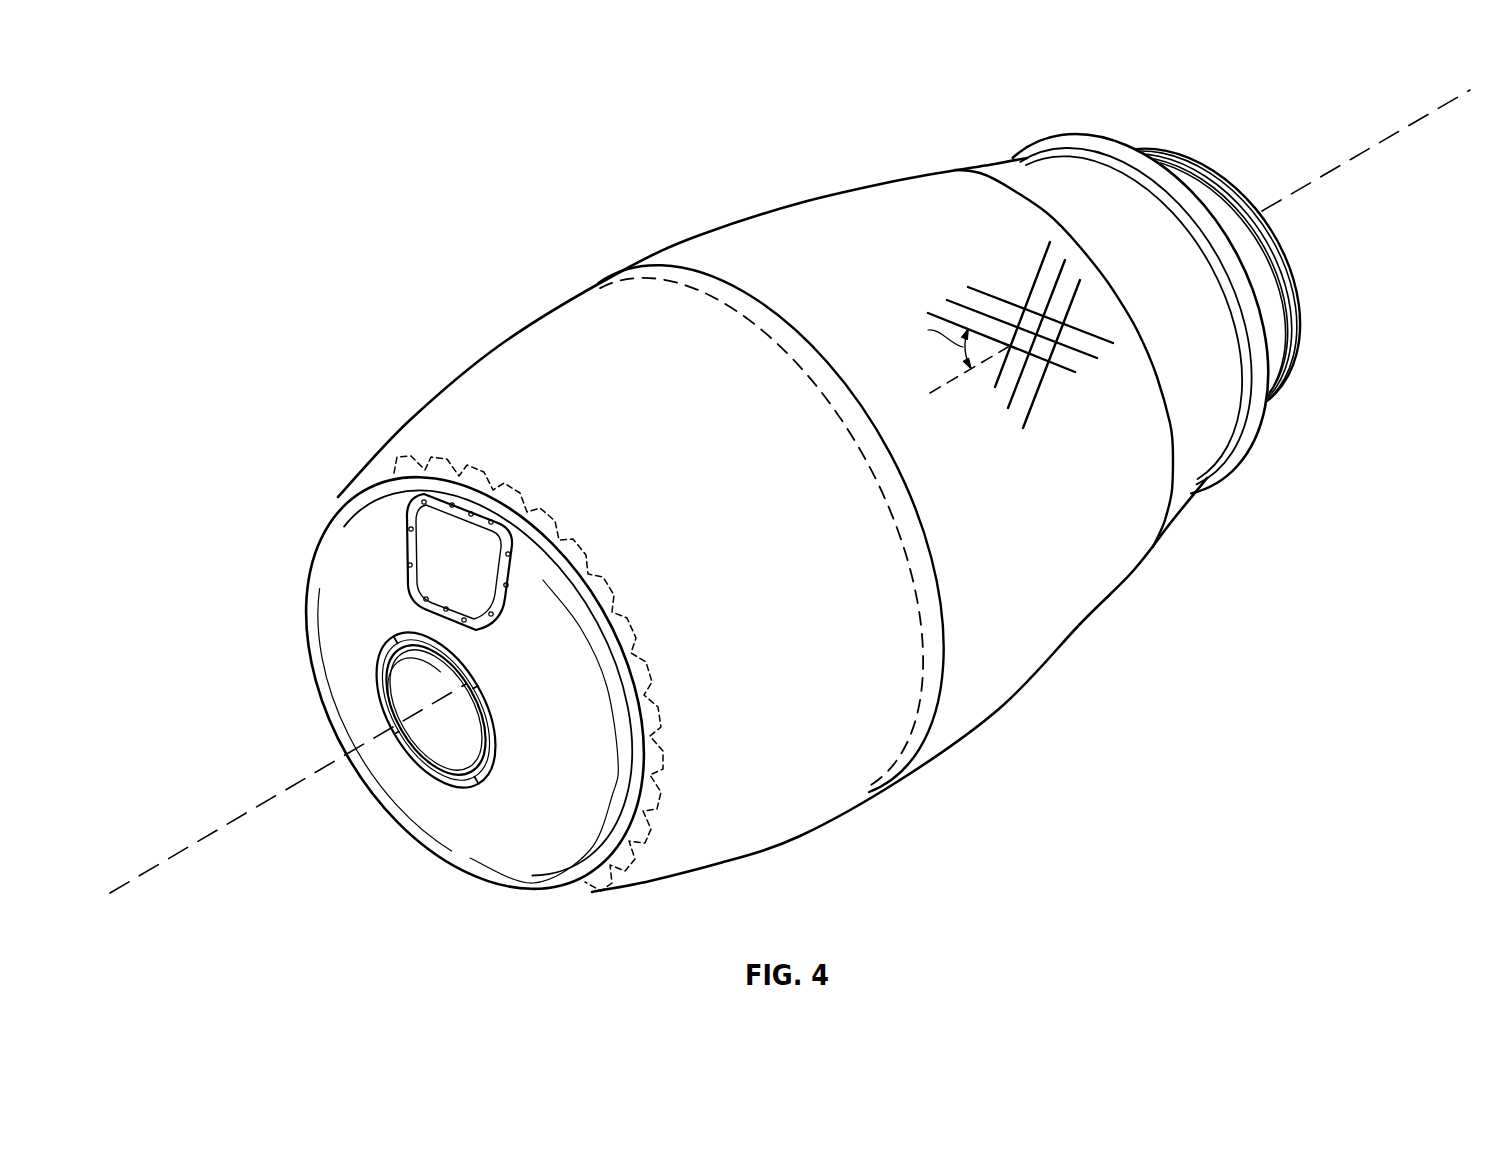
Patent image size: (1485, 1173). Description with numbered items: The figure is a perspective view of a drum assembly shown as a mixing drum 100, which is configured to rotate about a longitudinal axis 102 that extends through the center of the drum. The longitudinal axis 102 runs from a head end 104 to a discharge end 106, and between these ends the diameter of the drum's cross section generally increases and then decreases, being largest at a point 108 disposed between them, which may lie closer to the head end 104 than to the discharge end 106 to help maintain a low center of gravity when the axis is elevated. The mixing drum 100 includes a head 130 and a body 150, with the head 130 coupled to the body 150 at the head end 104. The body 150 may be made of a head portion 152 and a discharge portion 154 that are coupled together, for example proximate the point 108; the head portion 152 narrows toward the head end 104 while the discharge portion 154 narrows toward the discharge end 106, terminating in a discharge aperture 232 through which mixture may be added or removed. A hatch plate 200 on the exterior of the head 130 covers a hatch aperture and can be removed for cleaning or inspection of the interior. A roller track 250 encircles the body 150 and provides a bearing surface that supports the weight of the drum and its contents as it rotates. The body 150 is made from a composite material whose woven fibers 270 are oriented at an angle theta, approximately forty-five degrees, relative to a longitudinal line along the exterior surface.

The mixing drum 100 is at (244, 129).
The longitudinal axis 102 is at (233, 820).
The head end 104 is at (206, 439).
The discharge end 106 is at (1363, 467).
The point 108 is at (645, 268).
The head 130 is at (313, 581).
The body 150 is at (808, 207).
The head portion 152 is at (481, 371).
The discharge portion 154 is at (1118, 567).
The hatch plate 200 is at (434, 563).
The discharge aperture 232 is at (1242, 176).
The roller track 250 is at (1068, 134).
The fibers 270 is at (963, 290).